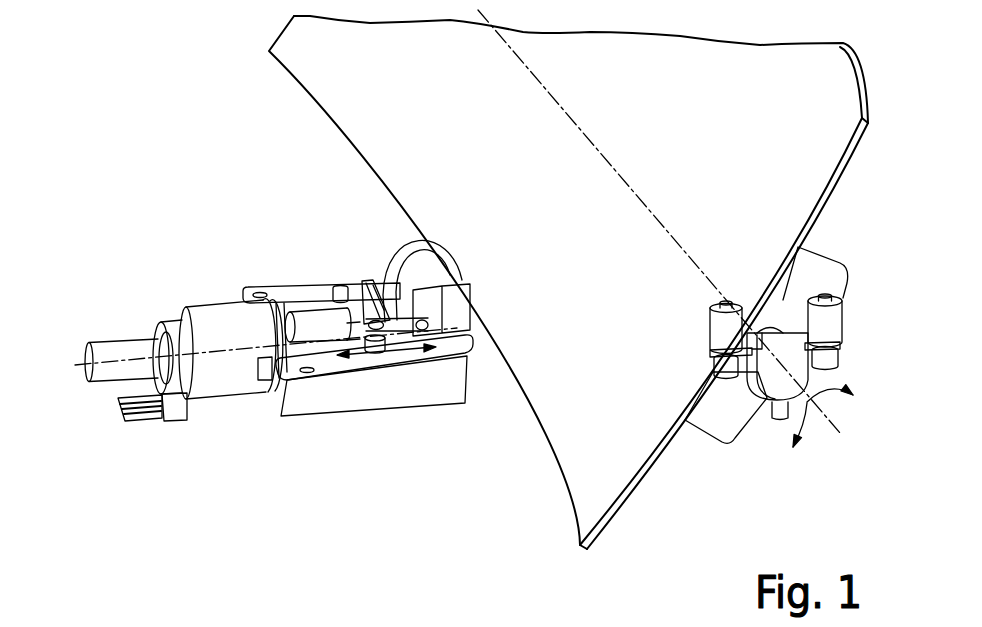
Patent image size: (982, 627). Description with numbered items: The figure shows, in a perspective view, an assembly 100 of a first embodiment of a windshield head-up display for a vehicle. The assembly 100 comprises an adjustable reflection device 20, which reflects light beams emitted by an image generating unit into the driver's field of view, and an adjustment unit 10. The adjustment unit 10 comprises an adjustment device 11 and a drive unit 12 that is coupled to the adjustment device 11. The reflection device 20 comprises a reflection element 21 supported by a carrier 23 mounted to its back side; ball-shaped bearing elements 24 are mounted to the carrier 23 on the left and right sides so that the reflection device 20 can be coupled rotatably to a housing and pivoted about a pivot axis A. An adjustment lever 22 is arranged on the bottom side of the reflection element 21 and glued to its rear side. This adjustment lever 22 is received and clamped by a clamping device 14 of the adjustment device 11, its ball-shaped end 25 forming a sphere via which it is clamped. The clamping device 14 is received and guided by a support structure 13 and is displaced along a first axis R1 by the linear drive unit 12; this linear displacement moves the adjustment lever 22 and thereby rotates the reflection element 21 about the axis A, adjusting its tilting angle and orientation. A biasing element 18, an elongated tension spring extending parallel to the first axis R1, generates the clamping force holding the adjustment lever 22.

The assembly 100 is at (232, 108).
The adjustment unit 10 is at (215, 252).
The adjustment device 11 is at (316, 437).
The drive unit 12 is at (208, 315).
The support structure 13 is at (293, 290).
The clamping device 14 is at (352, 262).
The biasing element 18 is at (383, 330).
The reflection device 20 is at (485, 428).
The reflection element 21 is at (706, 152).
The adjustment lever 22 is at (410, 247).
The carrier 23 is at (738, 417).
The bearing elements 24 is at (797, 297).
The ball-shaped end 25 is at (394, 334).
The first axis R1 is at (75, 367).
The pivot axis A is at (826, 422).